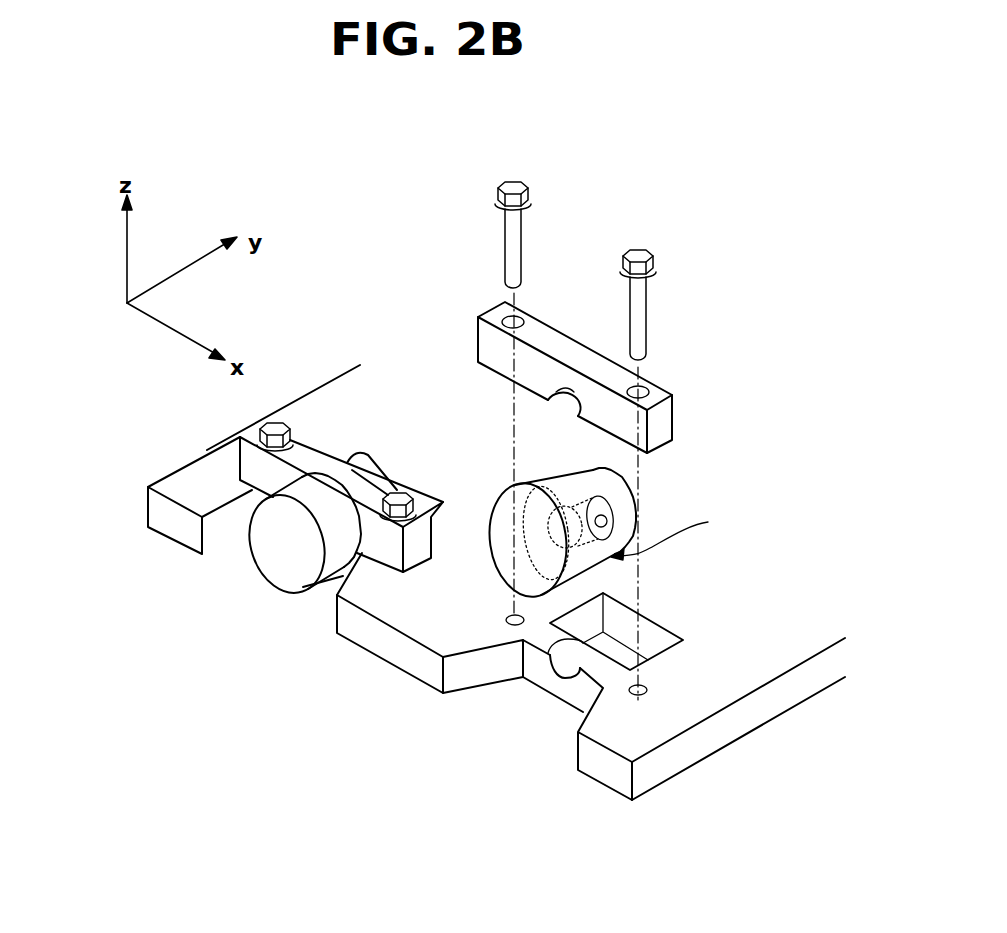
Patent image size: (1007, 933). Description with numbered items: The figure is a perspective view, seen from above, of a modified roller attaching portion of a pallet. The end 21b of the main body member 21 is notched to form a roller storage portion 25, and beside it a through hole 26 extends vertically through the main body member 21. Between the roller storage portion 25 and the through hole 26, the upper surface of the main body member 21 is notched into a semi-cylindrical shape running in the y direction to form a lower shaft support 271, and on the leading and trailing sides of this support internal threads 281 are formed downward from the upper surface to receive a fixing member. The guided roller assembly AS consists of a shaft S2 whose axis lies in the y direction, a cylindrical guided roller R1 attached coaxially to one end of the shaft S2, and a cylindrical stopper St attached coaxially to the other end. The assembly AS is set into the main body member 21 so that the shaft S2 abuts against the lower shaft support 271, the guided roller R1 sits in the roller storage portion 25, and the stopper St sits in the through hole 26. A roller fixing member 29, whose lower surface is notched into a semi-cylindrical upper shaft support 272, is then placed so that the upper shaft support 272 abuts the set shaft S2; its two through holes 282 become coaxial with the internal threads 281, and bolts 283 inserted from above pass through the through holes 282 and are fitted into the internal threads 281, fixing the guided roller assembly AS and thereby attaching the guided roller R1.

The main body member 21 is at (327, 383).
The end of the main body member 21b is at (167, 518).
The roller storage portion 25 is at (477, 670).
The through hole 26 is at (615, 657).
The lower shaft support 271 is at (550, 660).
The upper shaft support 272 is at (570, 400).
The internal thread 281 is at (640, 688).
The through hole 282 is at (663, 388).
The bolt 283 is at (648, 302).
The roller fixing member 29 is at (673, 425).
The stopper St is at (583, 501).
The guided roller R1 is at (505, 502).
The shaft S2 is at (612, 521).
The guided roller assembly AS is at (676, 532).